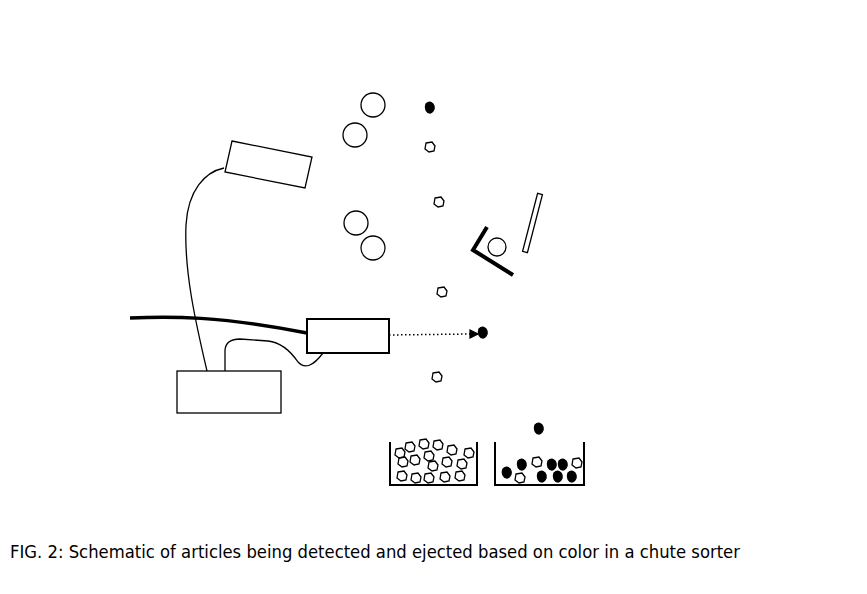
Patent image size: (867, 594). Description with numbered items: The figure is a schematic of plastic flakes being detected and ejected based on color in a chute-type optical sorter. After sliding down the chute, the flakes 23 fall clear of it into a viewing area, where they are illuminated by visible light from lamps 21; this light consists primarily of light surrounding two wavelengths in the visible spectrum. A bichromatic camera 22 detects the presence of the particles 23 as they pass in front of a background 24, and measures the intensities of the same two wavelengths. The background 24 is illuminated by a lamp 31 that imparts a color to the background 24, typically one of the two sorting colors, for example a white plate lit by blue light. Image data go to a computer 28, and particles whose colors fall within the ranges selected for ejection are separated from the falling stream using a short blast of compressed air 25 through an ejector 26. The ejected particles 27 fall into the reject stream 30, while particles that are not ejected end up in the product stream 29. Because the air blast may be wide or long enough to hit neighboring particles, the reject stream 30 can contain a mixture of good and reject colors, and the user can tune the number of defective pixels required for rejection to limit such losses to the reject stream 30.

The lamps 21 is at (357, 93).
The bichromatic camera 22 is at (249, 256).
The flakes 23 is at (450, 195).
The background 24 is at (542, 225).
The compressed air 25 is at (202, 322).
The ejector 26 is at (392, 336).
The ejected particles 27 is at (490, 335).
The computer 28 is at (250, 376).
The product stream 29 is at (433, 476).
The reject stream 30 is at (539, 477).
The lamp 31 is at (507, 253).